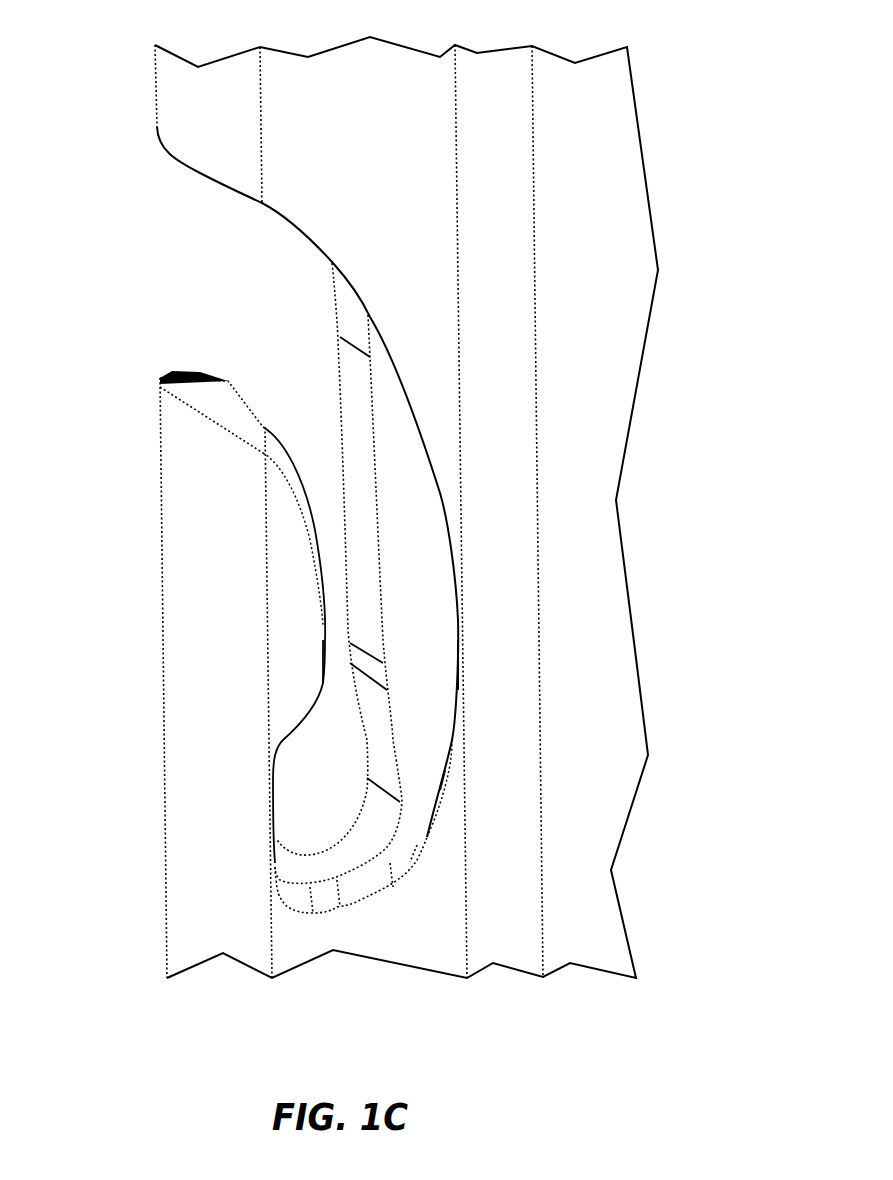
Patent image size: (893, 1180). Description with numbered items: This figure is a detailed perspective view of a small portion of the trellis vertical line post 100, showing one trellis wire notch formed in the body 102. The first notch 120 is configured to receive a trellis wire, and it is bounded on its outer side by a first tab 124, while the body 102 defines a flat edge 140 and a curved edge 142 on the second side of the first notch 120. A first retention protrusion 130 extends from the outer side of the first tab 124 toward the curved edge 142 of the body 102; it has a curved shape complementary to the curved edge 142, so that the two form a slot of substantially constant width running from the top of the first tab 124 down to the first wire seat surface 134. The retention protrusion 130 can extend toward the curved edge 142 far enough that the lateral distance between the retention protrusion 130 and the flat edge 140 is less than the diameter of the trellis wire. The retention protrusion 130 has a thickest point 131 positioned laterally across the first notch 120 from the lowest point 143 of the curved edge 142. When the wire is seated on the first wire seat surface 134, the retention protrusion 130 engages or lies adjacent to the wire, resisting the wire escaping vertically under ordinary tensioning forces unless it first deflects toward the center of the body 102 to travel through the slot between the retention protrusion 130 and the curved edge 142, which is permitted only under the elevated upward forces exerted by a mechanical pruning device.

The post 100 is at (689, 96).
The body 102 is at (175, 95).
The first notch 120 is at (146, 256).
The first tab 124 is at (188, 460).
The first retention protrusion 130 is at (290, 557).
The thickest point 131 is at (325, 647).
The first wire seat surface 134 is at (312, 872).
The flat edge 140 is at (355, 390).
The curved edge 142 is at (450, 780).
The lowest point 143 is at (463, 682).